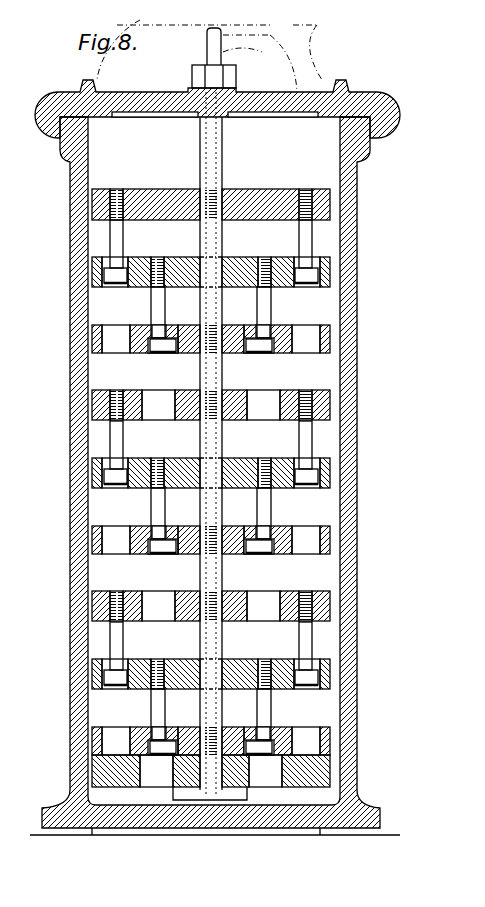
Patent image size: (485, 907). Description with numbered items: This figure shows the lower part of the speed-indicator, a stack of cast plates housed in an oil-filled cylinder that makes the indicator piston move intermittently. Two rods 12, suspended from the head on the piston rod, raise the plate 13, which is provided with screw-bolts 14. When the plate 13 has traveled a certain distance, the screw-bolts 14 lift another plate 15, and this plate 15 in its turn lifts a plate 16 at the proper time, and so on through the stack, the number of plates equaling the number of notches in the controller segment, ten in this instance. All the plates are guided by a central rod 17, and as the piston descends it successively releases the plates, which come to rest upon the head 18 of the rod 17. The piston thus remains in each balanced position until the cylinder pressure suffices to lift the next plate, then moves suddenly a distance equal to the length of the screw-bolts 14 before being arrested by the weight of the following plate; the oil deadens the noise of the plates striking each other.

The rods 12 is at (206, 40).
The plate 13 is at (257, 200).
The screw-bolts 14 is at (122, 241).
The plate 15 is at (177, 257).
The plate 16 is at (237, 340).
The central rod 17 is at (206, 142).
The head of the rod 18 is at (183, 792).